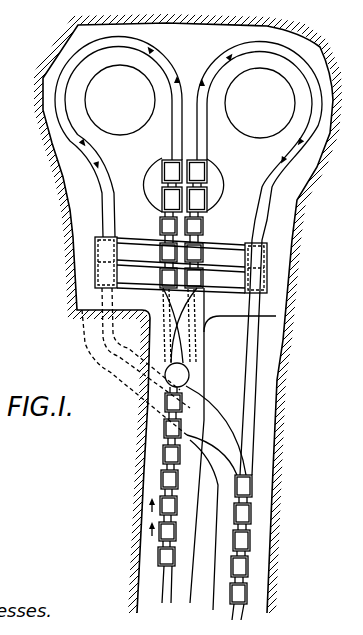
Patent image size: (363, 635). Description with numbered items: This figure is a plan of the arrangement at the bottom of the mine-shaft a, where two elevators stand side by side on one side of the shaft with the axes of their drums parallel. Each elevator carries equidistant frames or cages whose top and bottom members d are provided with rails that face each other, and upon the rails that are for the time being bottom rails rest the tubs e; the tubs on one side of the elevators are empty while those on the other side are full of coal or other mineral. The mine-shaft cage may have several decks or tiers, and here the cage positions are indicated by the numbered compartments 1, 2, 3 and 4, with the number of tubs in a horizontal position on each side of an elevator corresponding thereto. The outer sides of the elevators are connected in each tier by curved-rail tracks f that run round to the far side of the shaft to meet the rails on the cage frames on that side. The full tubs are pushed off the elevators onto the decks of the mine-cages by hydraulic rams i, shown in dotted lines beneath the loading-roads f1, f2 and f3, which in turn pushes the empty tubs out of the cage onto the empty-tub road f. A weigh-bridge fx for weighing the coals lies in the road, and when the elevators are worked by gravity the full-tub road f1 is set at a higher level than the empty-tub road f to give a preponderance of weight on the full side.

The mine-shaft a is at (224, 183).
The top and bottom members of the elevator cages d is at (93, 236).
The tubs e is at (203, 228).
The curved-rail tracks f is at (104, 160).
The loading or full-tub road f1 is at (161, 580).
The loading-road f2 is at (163, 298).
The loading-road f3 is at (198, 305).
The weigh-bridge fx is at (189, 375).
The hydraulic rams i is at (163, 350).
The cell 1 is at (172, 171).
The cell 2 is at (197, 171).
The cell 3 is at (172, 199).
The cell 4 is at (197, 199).